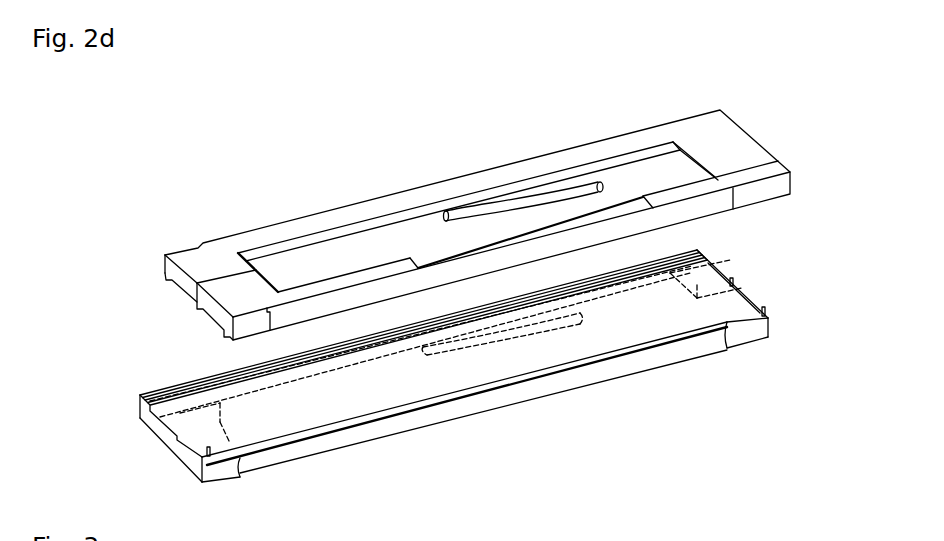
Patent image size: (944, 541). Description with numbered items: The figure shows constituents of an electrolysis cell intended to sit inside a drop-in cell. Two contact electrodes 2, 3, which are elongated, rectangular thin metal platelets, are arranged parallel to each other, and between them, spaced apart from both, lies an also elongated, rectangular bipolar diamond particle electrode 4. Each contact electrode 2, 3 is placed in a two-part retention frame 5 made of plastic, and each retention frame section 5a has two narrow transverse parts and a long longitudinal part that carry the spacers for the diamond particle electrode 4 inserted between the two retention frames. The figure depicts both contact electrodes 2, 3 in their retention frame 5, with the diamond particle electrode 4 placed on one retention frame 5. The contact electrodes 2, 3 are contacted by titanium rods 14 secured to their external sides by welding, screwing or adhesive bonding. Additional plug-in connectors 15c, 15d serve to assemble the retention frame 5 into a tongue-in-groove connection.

The contact electrode 2 is at (634, 178).
The contact electrode 3 is at (733, 330).
The bipolar diamond particle electrode 4 is at (708, 262).
The retention frame 5 is at (300, 196).
The retention frame section 5a is at (753, 167).
The titanium rod 14 is at (493, 205).
The plug-in connector 15c is at (288, 363).
The plug-in connector 15d is at (392, 413).